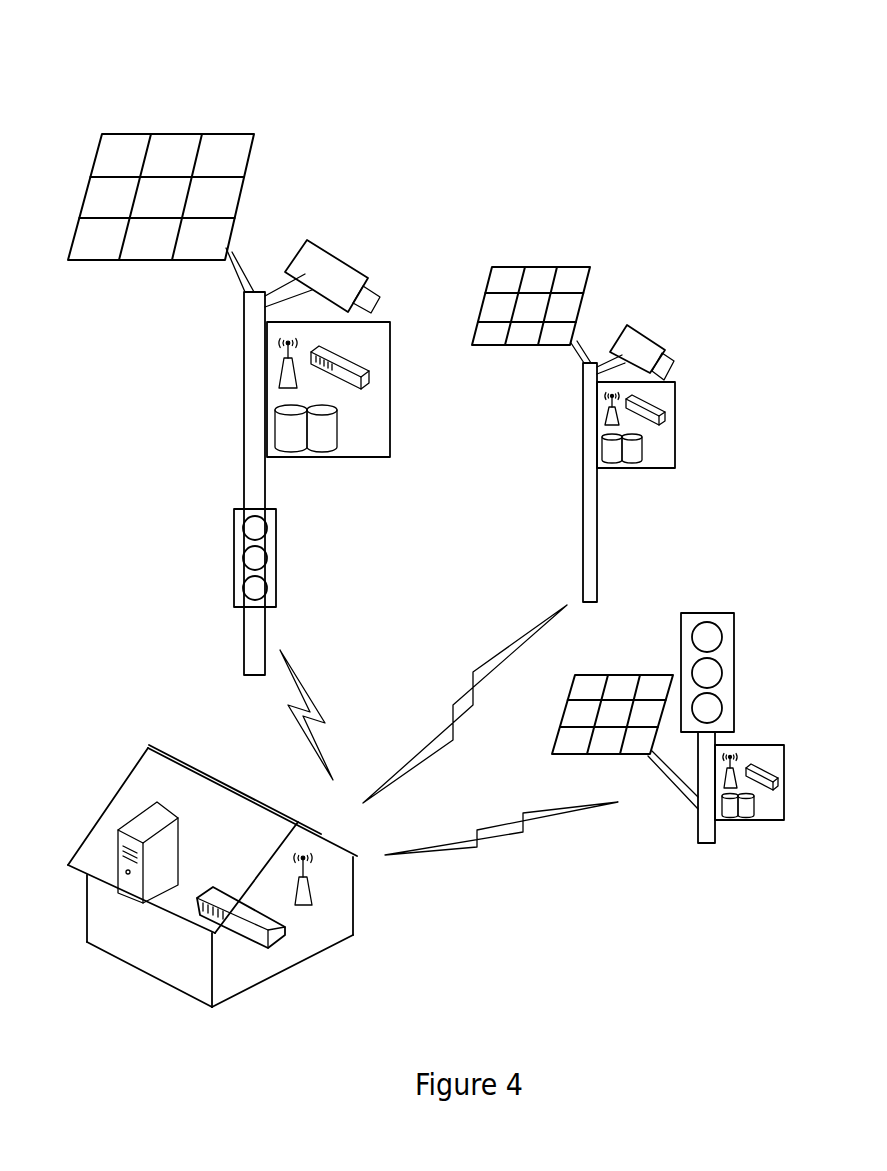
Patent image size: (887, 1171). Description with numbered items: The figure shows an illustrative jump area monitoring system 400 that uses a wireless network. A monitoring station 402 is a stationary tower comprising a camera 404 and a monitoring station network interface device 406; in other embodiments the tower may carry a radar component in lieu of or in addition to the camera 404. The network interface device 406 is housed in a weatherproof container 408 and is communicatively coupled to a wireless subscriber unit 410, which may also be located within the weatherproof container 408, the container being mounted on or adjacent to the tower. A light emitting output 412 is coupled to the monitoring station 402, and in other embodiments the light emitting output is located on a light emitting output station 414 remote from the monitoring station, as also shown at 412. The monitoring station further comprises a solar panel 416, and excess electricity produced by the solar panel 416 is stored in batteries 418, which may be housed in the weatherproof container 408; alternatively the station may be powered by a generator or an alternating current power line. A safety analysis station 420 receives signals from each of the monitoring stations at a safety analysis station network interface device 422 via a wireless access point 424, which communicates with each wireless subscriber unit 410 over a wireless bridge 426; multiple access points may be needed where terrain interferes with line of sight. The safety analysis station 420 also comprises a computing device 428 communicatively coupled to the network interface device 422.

The jump area monitoring system 400 is at (139, 67).
The monitoring station 402 is at (240, 437).
The camera 404 is at (320, 248).
The monitoring station network interface device 406 is at (353, 363).
The weatherproof container 408 is at (390, 333).
The wireless subscriber unit 410 is at (275, 373).
The light emitting output 412 is at (237, 550).
The light emitting output station 414 is at (701, 582).
The solar panel 416 is at (253, 157).
The batteries 418 is at (318, 450).
The safety analysis station 420 is at (98, 818).
The safety analysis station network interface device 422 is at (277, 942).
The wireless access point 424 is at (310, 892).
The wireless bridge 426 is at (300, 676).
The computing device 428 is at (140, 905).